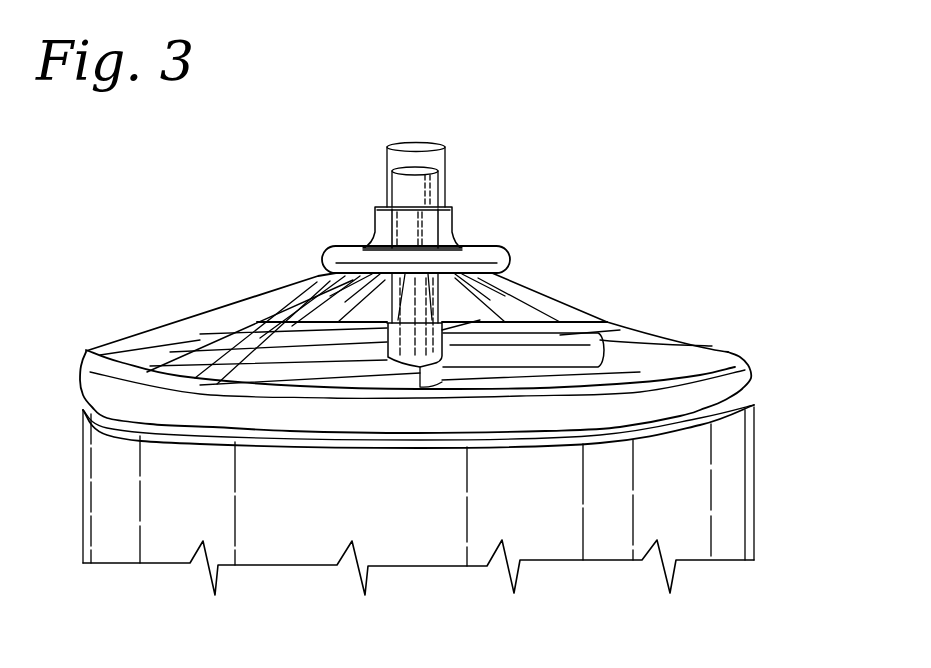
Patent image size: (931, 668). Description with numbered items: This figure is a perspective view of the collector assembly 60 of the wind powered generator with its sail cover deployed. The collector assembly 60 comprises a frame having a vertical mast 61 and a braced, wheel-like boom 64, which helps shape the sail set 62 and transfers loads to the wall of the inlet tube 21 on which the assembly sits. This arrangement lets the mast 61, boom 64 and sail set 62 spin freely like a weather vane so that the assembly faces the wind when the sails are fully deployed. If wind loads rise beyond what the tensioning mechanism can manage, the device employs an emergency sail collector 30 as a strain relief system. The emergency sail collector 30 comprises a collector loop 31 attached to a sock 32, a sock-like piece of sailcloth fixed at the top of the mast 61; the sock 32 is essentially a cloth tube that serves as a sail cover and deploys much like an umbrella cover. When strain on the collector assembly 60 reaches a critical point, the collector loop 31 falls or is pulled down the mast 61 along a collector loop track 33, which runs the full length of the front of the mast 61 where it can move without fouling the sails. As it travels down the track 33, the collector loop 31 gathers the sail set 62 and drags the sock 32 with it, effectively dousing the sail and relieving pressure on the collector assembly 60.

The emergency sail collector 30 is at (190, 176).
The inlet tube 21 is at (758, 470).
The sail set 62 is at (183, 326).
The boom 64 is at (750, 364).
The collector loop track 33 is at (345, 300).
The collector loop 31 is at (506, 257).
The collector assembly 60 is at (482, 223).
The sock 32 is at (387, 150).
The mast 61 is at (440, 180).